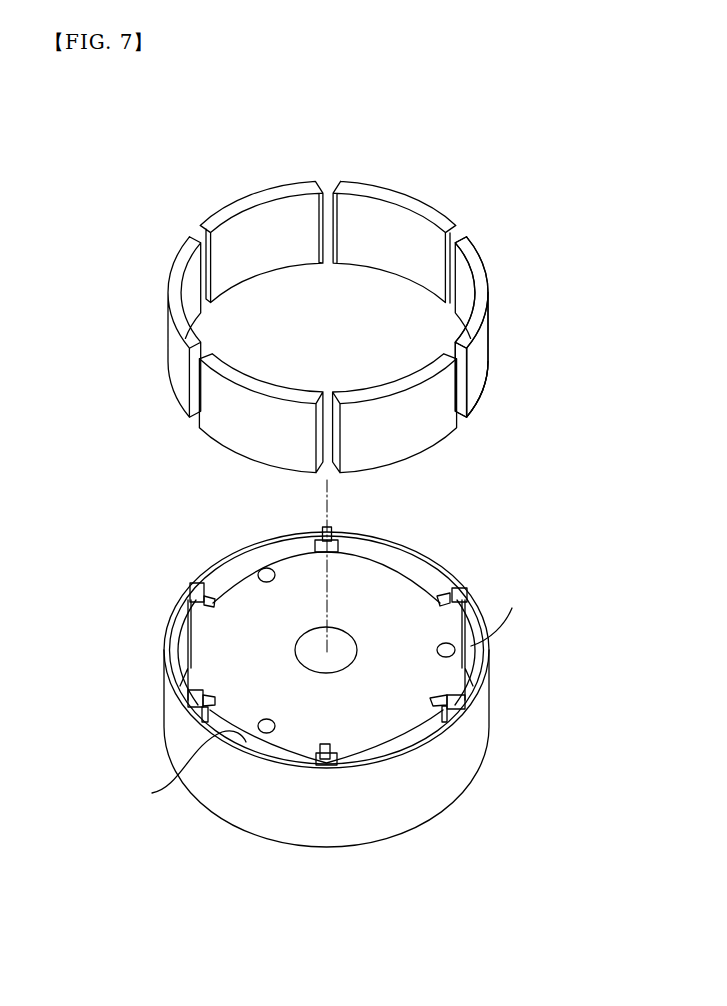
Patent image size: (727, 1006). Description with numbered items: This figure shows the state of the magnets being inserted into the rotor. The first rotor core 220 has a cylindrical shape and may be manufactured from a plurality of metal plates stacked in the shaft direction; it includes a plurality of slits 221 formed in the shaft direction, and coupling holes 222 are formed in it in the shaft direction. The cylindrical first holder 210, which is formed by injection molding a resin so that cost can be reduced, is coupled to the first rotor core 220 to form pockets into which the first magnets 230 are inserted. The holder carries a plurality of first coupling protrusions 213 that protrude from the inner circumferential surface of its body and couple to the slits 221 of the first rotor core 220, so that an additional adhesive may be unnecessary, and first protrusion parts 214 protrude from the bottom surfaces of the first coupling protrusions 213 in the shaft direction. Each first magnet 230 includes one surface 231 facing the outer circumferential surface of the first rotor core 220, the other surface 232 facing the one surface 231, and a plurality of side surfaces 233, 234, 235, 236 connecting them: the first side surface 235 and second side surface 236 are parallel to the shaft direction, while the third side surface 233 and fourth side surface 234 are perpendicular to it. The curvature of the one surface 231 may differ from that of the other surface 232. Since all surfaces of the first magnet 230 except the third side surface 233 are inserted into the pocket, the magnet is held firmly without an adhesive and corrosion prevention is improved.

The first holder 210 is at (265, 803).
The first coupling protrusion 213 is at (437, 598).
The first protrusion part 214 is at (457, 588).
The first rotor core 220 is at (212, 652).
The slit 221 is at (431, 696).
The coupling hole 222 is at (265, 571).
The first magnet 230 is at (407, 159).
The one surface 231 is at (261, 232).
The other surface 232 is at (478, 344).
The third side surface 233 is at (475, 277).
The fourth side surface 234 is at (477, 398).
The first side surface 235 is at (462, 373).
The second side surface 236 is at (460, 243).